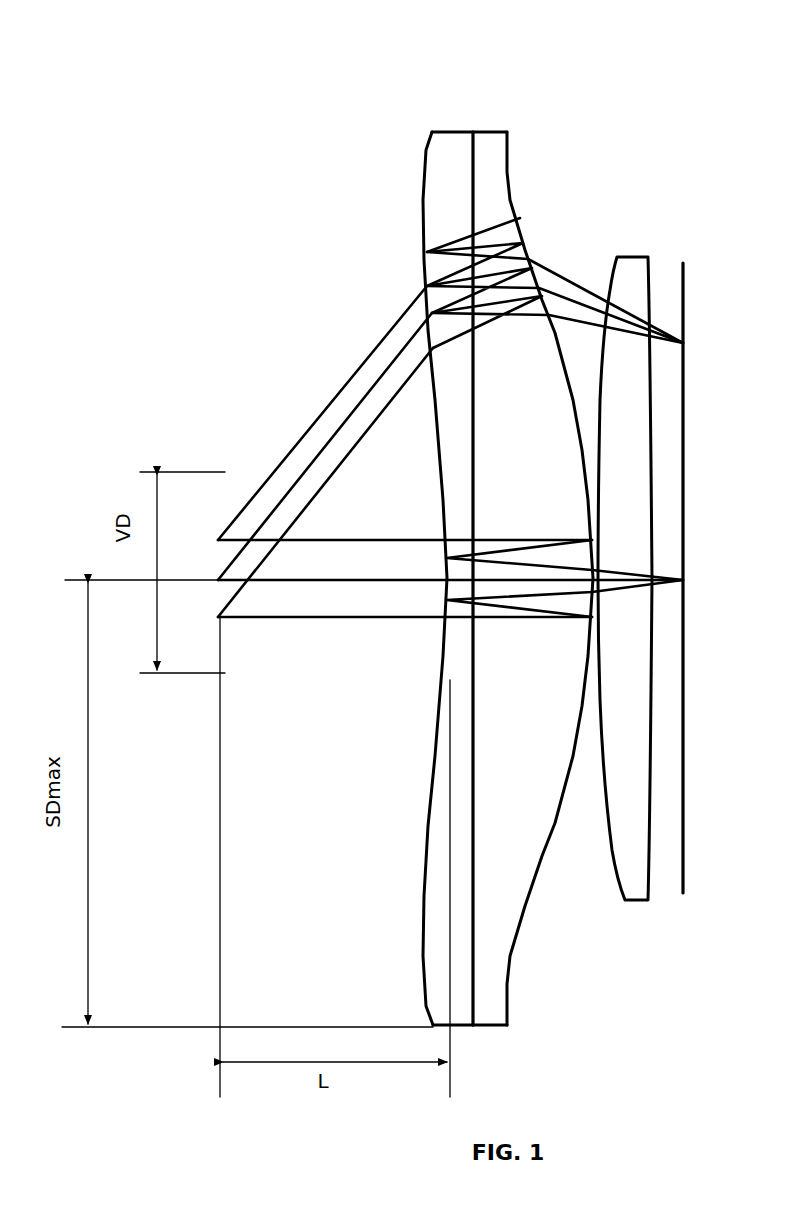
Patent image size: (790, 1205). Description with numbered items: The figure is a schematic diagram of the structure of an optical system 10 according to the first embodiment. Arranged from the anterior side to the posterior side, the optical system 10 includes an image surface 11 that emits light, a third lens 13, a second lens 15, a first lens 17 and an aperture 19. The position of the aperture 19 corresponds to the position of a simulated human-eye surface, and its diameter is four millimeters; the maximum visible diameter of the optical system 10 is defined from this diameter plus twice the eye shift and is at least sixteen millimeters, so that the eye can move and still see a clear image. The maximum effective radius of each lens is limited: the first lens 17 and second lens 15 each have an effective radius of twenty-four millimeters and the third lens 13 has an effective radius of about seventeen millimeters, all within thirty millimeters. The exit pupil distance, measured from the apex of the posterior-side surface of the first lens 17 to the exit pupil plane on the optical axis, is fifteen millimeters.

The optical system 10 is at (441, 44).
The image surface 11 is at (683, 560).
The third lens 13 is at (625, 564).
The second lens 15 is at (533, 560).
The first lens 17 is at (448, 562).
The aperture 19 is at (227, 629).